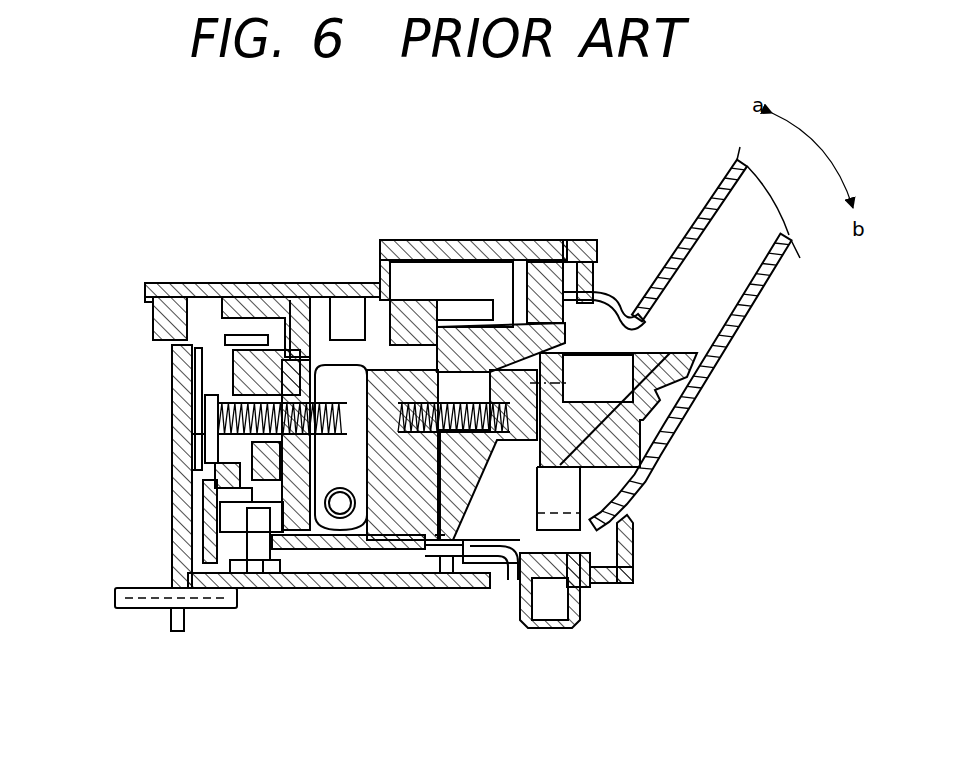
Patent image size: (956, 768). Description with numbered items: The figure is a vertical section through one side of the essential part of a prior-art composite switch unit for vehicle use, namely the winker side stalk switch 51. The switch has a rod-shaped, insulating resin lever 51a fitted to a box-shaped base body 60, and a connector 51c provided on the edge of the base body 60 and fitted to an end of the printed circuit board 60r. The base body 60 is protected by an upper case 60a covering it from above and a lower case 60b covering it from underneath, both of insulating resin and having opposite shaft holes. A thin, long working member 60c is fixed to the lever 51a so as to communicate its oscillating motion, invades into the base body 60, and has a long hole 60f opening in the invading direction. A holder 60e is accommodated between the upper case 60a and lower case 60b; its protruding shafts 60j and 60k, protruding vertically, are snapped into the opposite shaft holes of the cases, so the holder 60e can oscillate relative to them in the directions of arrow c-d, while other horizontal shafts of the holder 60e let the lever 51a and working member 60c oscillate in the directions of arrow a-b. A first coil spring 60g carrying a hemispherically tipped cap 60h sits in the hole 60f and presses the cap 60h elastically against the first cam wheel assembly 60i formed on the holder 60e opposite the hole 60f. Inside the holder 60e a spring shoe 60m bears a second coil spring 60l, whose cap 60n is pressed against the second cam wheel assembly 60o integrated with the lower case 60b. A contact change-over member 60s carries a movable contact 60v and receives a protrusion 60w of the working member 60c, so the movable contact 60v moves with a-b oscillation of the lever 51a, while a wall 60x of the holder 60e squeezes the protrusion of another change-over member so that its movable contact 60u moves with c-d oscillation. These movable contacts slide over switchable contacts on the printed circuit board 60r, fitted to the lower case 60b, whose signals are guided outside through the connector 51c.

The winker side stalk switch 51 is at (605, 160).
The lever 51a is at (140, 605).
The connector 51c is at (225, 612).
The base body 60 is at (420, 188).
The upper case 60a is at (472, 258).
The lower case 60b is at (177, 556).
The working member 60c is at (532, 364).
The holder 60e is at (245, 348).
The long hole 60f is at (455, 292).
The first coil spring 60g is at (475, 418).
The cap 60h is at (380, 335).
The first cam wheel assembly 60i is at (410, 550).
The protruding shaft 60j is at (545, 242).
The protruding shaft 60k is at (548, 628).
The second coil spring 60l is at (212, 442).
The spring shoe 60m is at (342, 520).
The cap 60n is at (208, 398).
The second cam wheel assembly 60o is at (195, 380).
The printed circuit board 60r is at (332, 590).
The contact change-over member 60s is at (462, 590).
The movable contact 60u is at (250, 588).
The movable contact 60v is at (382, 552).
The protrusion 60w is at (442, 560).
The wall 60x is at (182, 505).